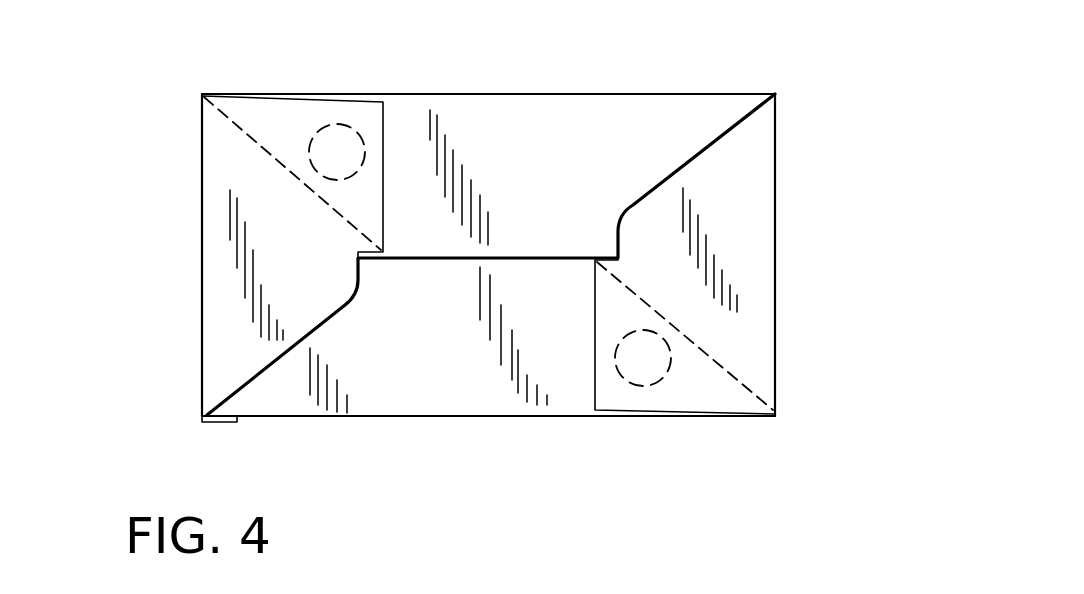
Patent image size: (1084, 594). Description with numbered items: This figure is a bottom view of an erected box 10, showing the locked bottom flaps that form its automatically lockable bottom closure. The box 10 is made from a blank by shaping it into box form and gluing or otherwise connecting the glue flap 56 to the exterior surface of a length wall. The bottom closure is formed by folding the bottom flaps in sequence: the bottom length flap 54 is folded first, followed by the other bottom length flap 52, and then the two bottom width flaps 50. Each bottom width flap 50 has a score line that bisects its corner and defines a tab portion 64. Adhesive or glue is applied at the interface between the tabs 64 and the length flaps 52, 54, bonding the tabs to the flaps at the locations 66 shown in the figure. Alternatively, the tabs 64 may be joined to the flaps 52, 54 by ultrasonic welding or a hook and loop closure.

The box 10 is at (620, 65).
The bottom width flap 50 is at (215, 272).
The bottom length flap 52 is at (393, 400).
The bottom length flap 54 is at (533, 118).
The glue flap 56 is at (218, 423).
The tab portion 64 is at (355, 112).
The adhesive bond 66 is at (322, 126).